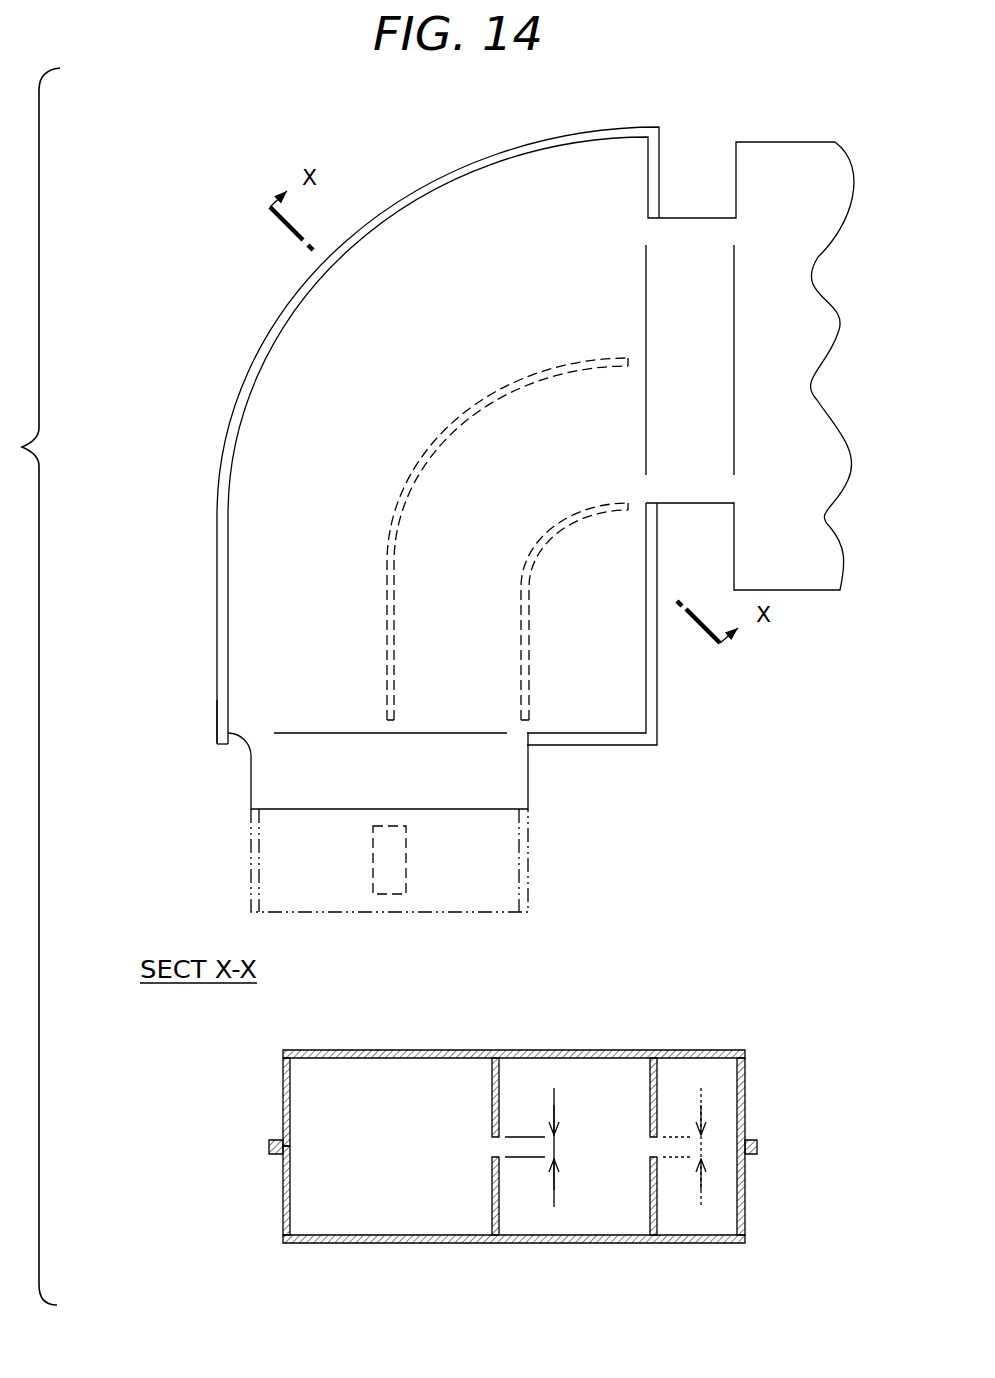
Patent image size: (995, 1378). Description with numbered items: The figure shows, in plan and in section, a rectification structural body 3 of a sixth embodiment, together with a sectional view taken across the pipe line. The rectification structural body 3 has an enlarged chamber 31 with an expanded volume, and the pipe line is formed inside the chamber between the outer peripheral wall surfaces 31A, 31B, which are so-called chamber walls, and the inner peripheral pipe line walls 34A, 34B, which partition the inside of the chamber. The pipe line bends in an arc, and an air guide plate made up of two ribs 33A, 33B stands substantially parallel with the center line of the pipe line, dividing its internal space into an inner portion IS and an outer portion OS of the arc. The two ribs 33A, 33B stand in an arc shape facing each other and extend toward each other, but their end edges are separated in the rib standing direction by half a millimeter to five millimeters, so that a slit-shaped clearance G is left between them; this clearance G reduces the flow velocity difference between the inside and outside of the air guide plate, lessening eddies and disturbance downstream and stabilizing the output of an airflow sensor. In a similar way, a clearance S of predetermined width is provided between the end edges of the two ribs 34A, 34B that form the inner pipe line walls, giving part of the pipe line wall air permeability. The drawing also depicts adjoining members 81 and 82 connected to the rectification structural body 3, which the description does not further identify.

The rectification structural body 3 is at (205, 757).
The enlarged chamber 31 is at (310, 377).
The outer peripheral wall surface 31A is at (277, 1112).
The outer peripheral wall surface 31B is at (277, 1198).
The rib of air guide plate 33A is at (383, 567).
The rib of air guide plate 33B is at (490, 1202).
The inner peripheral pipe line wall 34A is at (535, 688).
The inner peripheral pipe line wall 34B is at (647, 1207).
The connecting member 81 is at (770, 183).
The connecting portion 82 is at (420, 872).
The outer portion of the arc OS is at (480, 255).
The inner portion of the arc IS is at (590, 423).
The slit-shaped clearance G is at (541, 1147).
The clearance S is at (693, 1147).